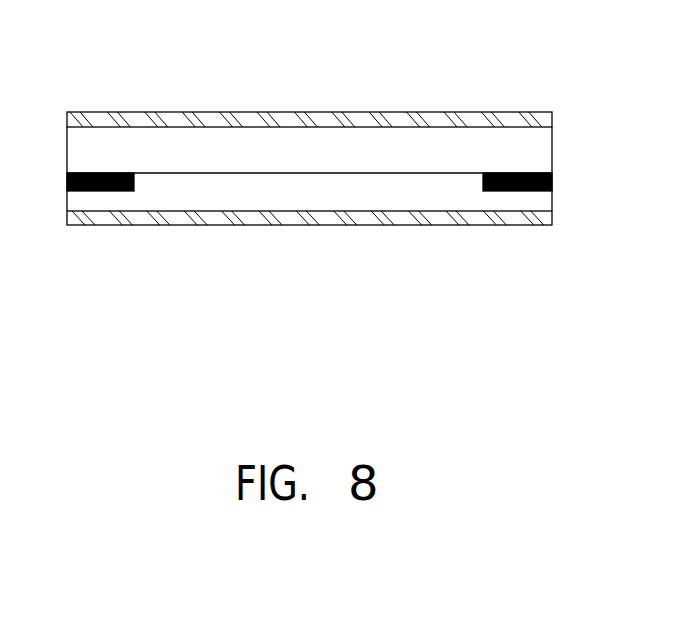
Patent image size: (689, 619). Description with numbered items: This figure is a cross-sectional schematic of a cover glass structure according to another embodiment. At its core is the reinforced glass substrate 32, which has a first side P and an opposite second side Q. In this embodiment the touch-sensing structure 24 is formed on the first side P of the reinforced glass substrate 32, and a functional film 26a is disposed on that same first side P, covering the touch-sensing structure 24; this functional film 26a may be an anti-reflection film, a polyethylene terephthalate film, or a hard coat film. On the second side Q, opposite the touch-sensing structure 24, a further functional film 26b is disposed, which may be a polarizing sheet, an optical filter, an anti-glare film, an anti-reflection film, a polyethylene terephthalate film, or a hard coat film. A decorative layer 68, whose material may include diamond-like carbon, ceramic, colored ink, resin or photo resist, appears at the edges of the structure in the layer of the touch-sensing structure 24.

The functional film 26b is at (420, 121).
The functional film 26a is at (170, 215).
The reinforced glass substrate 32 is at (322, 162).
The touch-sensing structure 24 is at (322, 202).
The decorative layer 68 is at (509, 192).
The first side P is at (220, 173).
The second side Q is at (387, 140).